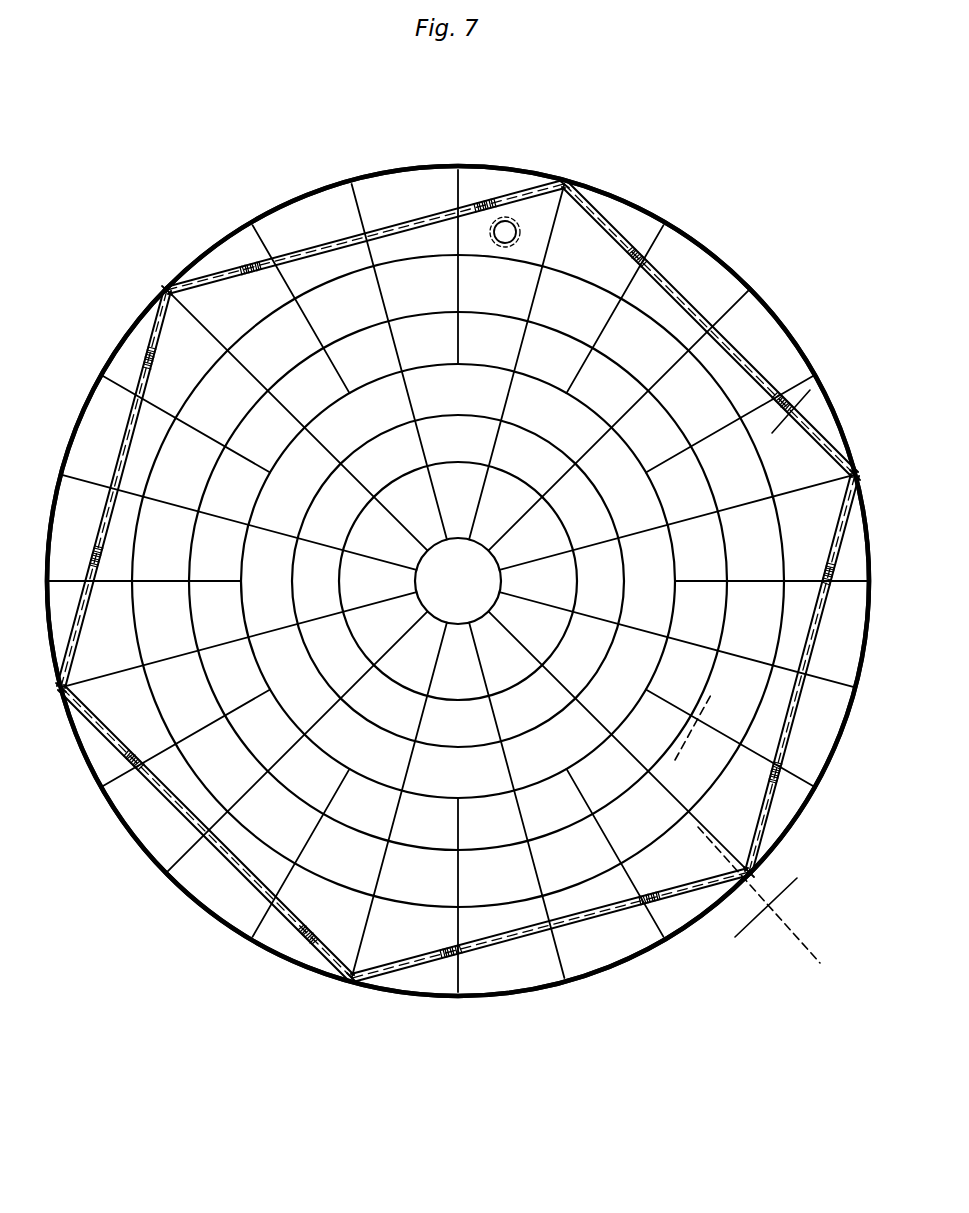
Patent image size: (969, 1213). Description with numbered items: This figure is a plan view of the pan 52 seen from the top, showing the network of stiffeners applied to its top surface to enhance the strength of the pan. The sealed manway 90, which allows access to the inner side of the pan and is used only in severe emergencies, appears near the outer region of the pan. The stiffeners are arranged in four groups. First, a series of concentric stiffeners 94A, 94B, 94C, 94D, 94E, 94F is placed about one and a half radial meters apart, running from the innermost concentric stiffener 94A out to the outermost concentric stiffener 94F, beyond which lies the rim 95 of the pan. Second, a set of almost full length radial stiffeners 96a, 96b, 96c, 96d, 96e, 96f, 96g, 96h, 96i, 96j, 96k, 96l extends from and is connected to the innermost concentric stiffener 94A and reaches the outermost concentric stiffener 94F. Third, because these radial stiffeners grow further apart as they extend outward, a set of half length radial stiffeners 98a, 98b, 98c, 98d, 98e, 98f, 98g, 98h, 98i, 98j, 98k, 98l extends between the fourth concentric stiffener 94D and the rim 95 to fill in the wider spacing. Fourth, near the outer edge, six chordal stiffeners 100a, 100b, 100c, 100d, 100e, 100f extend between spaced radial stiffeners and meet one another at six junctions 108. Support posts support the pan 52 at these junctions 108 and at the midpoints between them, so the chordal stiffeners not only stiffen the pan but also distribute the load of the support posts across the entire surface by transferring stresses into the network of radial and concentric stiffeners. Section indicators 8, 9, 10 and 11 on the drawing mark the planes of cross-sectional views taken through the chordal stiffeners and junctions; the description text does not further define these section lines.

The pan 52 is at (433, 141).
The sealed manway 90 is at (517, 221).
The innermost concentric stiffener 94A is at (494, 597).
The concentric stiffener 94B is at (564, 572).
The concentric stiffener 94C is at (604, 573).
The fourth concentric stiffener 94D is at (641, 565).
The concentric stiffener 94E is at (717, 546).
The outermost concentric stiffener 94F is at (766, 530).
The rim 95 is at (808, 533).
The full length radial stiffener 96a is at (600, 633).
The full length radial stiffener 96b is at (557, 697).
The full length radial stiffener 96c is at (487, 720).
The full length radial stiffener 96d is at (413, 707).
The full length radial stiffener 96e is at (353, 680).
The full length radial stiffener 96f is at (320, 608).
The full length radial stiffener 96g is at (323, 547).
The full length radial stiffener 96h is at (360, 487).
The full length radial stiffener 96i is at (428, 446).
The full length radial stiffener 96j is at (497, 450).
The full length radial stiffener 96k is at (547, 498).
The full length radial stiffener 96l is at (630, 521).
The half length radial stiffener 98a is at (668, 710).
The half length radial stiffener 98b is at (583, 818).
The half length radial stiffener 98c is at (470, 822).
The half length radial stiffener 98d is at (342, 773).
The half length radial stiffener 98e is at (243, 697).
The half length radial stiffener 98f is at (210, 573).
The half length radial stiffener 98g is at (280, 428).
The half length radial stiffener 98h is at (330, 357).
The half length radial stiffener 98i is at (463, 333).
The half length radial stiffener 98j is at (575, 366).
The half length radial stiffener 98k is at (660, 460).
The half length radial stiffener 98l is at (722, 601).
The chordal stiffener 100a is at (770, 330).
The chordal stiffener 100b is at (777, 807).
The chordal stiffener 100c is at (536, 992).
The chordal stiffener 100d is at (198, 902).
The chordal stiffener 100e is at (150, 362).
The chordal stiffener 100f is at (383, 227).
The junction of the chordal stiffeners 108 is at (567, 183).
The section line 8- 8 is at (693, 771).
The section line 9- 9 is at (810, 390).
The section line 10- 10 is at (836, 944).
The section line 11- 11 is at (722, 924).